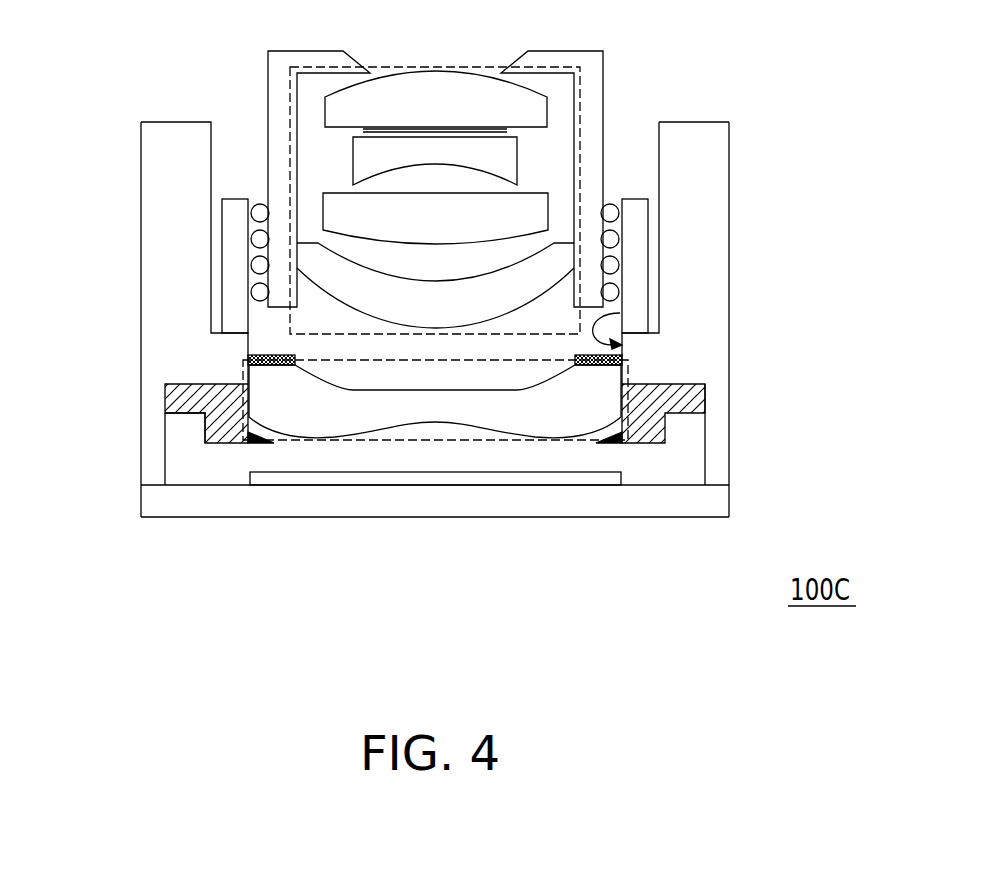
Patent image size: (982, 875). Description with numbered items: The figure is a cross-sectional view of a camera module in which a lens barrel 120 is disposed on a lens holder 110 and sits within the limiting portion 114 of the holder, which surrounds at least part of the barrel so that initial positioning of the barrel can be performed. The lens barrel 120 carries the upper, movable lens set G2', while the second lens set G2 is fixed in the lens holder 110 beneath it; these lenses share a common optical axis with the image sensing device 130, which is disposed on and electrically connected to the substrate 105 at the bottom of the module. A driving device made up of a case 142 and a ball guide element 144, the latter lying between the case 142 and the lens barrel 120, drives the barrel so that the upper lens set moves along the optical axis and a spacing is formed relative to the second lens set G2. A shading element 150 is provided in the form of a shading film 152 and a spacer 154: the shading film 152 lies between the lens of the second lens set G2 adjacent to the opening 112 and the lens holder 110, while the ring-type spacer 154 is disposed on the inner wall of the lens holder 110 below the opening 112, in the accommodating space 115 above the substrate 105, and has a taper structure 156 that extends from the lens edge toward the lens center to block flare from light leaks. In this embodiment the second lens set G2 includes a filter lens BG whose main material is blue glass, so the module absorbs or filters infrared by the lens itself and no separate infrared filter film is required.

The substrate 105 is at (713, 500).
The lens holder 110 is at (730, 138).
The opening 112 is at (620, 313).
The limiting portion 114 is at (703, 175).
The accommodating space 115 is at (185, 426).
The lens barrel 120 is at (592, 80).
The image sensing device 130 is at (443, 480).
The case 142 is at (635, 254).
The ball guide element 144 is at (612, 212).
The shading element 150 is at (360, 387).
The shading film 152 is at (250, 352).
The spacer 154 is at (185, 402).
The taper structure 156 is at (255, 443).
The filter lens BG is at (540, 413).
The second lens set G2 is at (516, 400).
The first (movable) lens group G2' is at (435, 169).